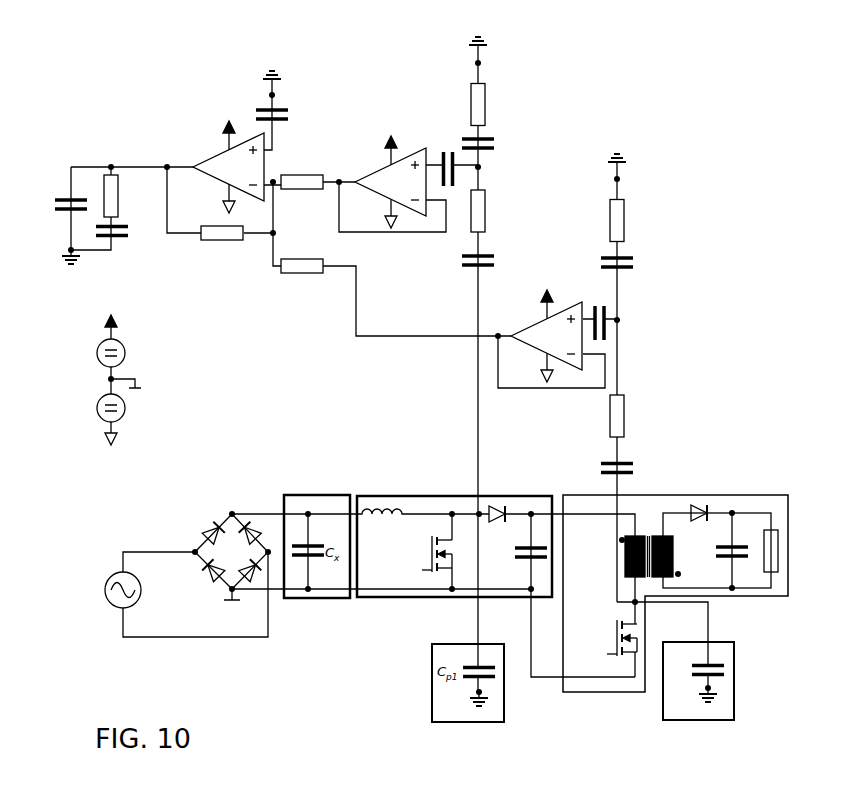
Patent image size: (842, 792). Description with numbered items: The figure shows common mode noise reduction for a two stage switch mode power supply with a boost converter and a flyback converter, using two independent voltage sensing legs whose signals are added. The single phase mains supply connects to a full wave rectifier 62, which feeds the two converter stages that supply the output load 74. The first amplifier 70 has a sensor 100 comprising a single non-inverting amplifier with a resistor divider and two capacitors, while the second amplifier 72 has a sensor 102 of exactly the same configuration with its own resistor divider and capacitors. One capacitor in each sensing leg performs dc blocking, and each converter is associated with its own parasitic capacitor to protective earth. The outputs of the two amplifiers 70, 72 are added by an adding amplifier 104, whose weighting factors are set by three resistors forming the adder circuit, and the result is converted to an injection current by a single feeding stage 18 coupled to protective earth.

The feeding stage 18 is at (78, 158).
The adding amplifier 104 is at (190, 145).
The first amplifier 70 is at (376, 126).
The sensor 100 is at (522, 98).
The sensor 102 is at (657, 190).
The second amplifier 72 is at (544, 281).
The output load 74 is at (781, 543).
The full wave rectifier 62 is at (186, 512).